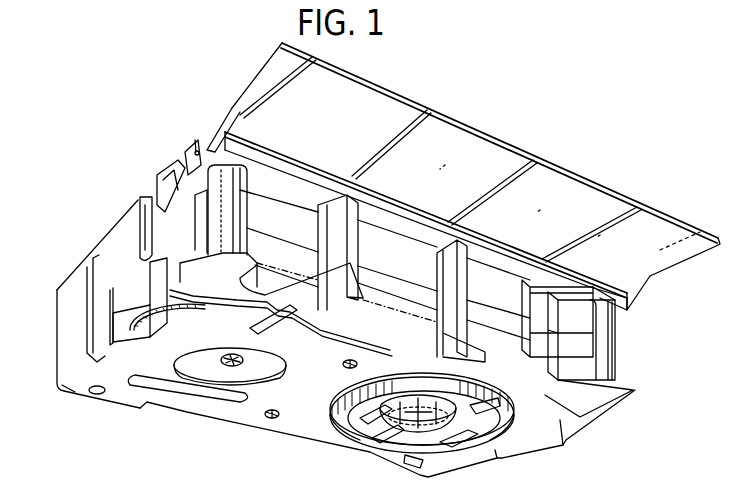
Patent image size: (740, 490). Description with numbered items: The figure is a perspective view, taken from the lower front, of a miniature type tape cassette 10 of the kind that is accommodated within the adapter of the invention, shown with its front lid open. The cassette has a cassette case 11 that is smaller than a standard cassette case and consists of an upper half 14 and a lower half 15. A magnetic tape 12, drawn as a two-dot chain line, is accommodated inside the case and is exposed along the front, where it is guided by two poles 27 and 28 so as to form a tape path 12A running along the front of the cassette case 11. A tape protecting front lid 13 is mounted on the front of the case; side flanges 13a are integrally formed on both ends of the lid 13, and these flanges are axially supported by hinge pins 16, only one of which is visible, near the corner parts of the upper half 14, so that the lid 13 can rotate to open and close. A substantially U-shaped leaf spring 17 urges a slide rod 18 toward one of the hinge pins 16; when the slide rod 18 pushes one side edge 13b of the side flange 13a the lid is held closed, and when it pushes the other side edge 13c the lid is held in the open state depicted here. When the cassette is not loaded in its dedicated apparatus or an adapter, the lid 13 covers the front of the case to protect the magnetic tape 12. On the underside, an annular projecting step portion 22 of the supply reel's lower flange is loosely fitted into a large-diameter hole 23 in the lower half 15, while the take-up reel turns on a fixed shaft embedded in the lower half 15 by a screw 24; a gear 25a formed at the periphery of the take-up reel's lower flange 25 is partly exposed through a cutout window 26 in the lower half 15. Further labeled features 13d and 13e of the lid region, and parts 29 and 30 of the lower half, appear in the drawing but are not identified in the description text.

The miniature type tape cassette 10 is at (428, 87).
The cassette case 11 is at (100, 238).
The magnetic tape 12 is at (420, 236).
The tape path 12A is at (523, 270).
The tape protecting front lid 13 is at (521, 148).
The side flange 13a is at (207, 126).
The one side edge of side flange 13b is at (251, 131).
The another side edge of side flange 13c is at (191, 152).
The lid front lip 13d is at (585, 173).
The lid end portion 13e is at (650, 218).
The upper half 14 is at (62, 278).
The lower half 15 is at (55, 358).
The hinge pin 16 is at (195, 140).
The U-shaped leaf spring 17 is at (140, 222).
The slide rod 18 is at (175, 165).
The annular projecting step portion 22 is at (345, 422).
The hole 23 is at (332, 401).
The screw 24 is at (238, 372).
The lower flange of take-up reel 25 is at (163, 330).
The gear 25a is at (137, 325).
The cutout window 26 is at (123, 340).
The pole 27 is at (615, 342).
The pole 28 is at (247, 220).
The base flange 29 is at (575, 414).
The tab 30 is at (293, 298).